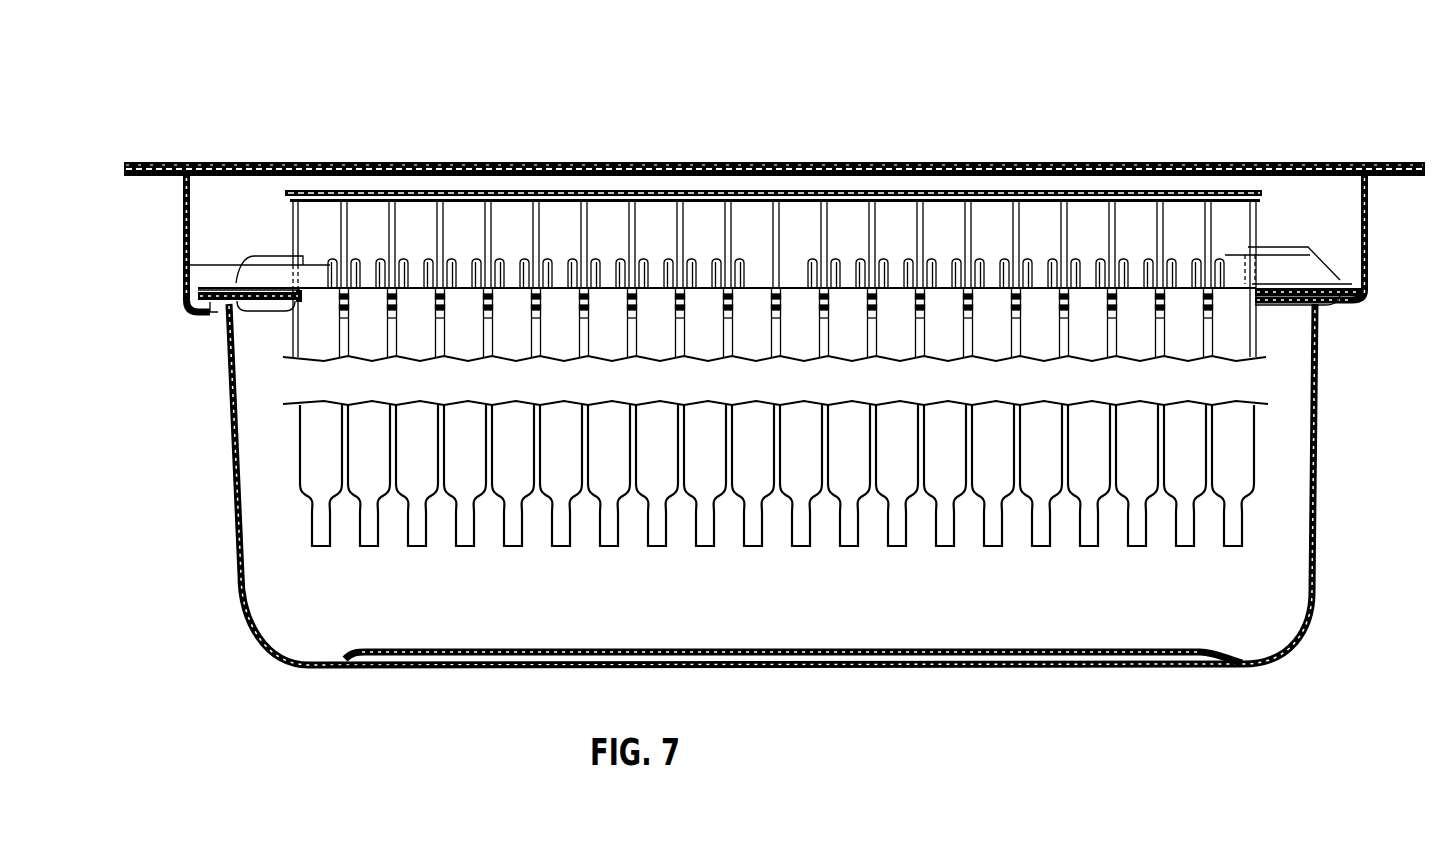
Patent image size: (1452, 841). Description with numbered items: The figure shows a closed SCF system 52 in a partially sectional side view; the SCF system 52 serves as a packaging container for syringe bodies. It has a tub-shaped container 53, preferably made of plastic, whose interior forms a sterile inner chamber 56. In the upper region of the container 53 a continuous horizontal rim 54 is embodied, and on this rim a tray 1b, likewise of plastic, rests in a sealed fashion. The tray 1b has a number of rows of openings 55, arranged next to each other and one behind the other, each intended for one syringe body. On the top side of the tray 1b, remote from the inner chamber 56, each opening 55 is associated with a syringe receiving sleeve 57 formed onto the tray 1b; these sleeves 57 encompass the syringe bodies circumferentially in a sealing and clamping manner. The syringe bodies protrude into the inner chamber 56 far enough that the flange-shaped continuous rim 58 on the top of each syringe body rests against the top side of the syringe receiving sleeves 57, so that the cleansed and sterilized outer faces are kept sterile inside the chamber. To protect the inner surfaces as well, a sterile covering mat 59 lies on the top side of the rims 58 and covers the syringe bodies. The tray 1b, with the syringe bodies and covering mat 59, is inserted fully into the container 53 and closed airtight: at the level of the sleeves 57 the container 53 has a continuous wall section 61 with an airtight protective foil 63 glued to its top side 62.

The SCF system 52 is at (934, 135).
The tub-shaped container 53 is at (228, 571).
The continuous horizontal rim 54 is at (217, 316).
The openings 55 is at (280, 318).
The sterile inner chamber 56 is at (270, 517).
The syringe receiving sleeve 57 is at (292, 240).
The flange-shaped continuous rim 58 is at (1262, 203).
The sterile covering mat 59 is at (1262, 183).
The continuous wall section 61 is at (1370, 237).
The top side 62 is at (163, 158).
The airtight protective foil 63 is at (567, 162).
The tray 1b is at (245, 283).